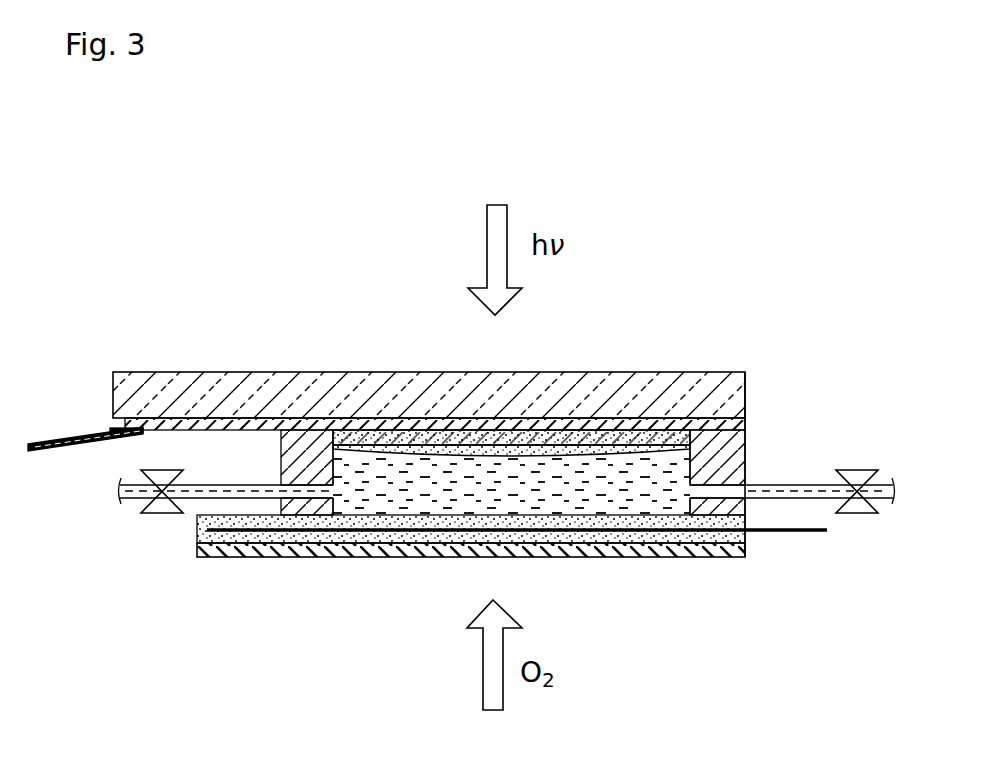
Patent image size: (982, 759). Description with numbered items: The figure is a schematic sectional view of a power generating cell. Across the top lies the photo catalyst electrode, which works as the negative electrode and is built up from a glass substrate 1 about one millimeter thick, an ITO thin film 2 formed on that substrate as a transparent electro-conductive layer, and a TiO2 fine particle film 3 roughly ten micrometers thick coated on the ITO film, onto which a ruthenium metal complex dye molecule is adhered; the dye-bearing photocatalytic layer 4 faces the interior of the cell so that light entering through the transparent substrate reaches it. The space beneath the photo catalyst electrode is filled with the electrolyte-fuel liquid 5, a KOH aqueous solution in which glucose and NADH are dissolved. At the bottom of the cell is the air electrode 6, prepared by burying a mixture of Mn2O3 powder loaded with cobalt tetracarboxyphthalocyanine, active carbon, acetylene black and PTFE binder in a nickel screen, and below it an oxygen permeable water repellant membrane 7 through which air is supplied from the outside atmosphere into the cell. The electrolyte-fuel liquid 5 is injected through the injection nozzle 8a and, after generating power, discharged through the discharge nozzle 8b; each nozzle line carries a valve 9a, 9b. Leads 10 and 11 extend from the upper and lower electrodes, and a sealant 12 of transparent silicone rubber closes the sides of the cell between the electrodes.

The glass substrate 1 is at (599, 396).
The ITO thin film 2 is at (650, 437).
The TiO2 fine particle film 3 is at (689, 424).
The photocatalyst layer 4 is at (410, 447).
The electrolyte-fuel liquid 5 is at (596, 493).
The air electrode 6 is at (652, 537).
The oxygen permeable water repellant membrane 7 is at (690, 548).
The injection nozzle 8a is at (780, 485).
The discharge nozzle 8b is at (200, 498).
The outlet valve 9a is at (865, 469).
The inlet valve 9b is at (147, 516).
The upper electrode lead 10 is at (53, 438).
The lower electrode lead 11 is at (795, 534).
The sealant 12 is at (300, 454).